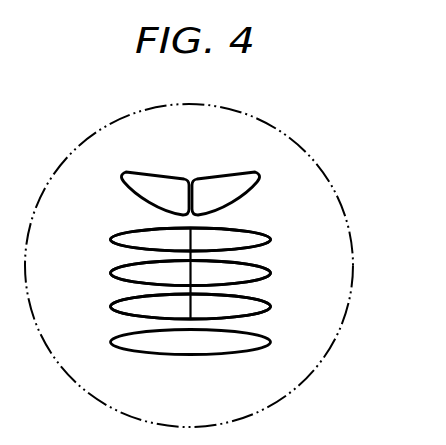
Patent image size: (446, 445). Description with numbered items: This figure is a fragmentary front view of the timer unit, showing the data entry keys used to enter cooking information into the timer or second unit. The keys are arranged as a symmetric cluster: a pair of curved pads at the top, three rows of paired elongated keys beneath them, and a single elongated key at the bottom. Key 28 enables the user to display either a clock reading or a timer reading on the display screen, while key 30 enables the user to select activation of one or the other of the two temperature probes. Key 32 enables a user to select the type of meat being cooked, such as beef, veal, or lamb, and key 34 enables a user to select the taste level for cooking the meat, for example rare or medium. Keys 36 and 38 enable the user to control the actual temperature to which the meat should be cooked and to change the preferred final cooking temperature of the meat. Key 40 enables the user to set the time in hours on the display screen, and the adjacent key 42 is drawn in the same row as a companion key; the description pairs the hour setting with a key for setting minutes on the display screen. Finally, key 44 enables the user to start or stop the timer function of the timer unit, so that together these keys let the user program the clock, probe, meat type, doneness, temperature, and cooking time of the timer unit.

The key 28 is at (143, 174).
The key 30 is at (238, 174).
The key 32 is at (126, 231).
The key 34 is at (256, 231).
The key 36 is at (113, 268).
The key 38 is at (268, 268).
The key 40 is at (112, 307).
The third elongated electrode (right portion) 42 is at (270, 307).
The key 44 is at (191, 355).